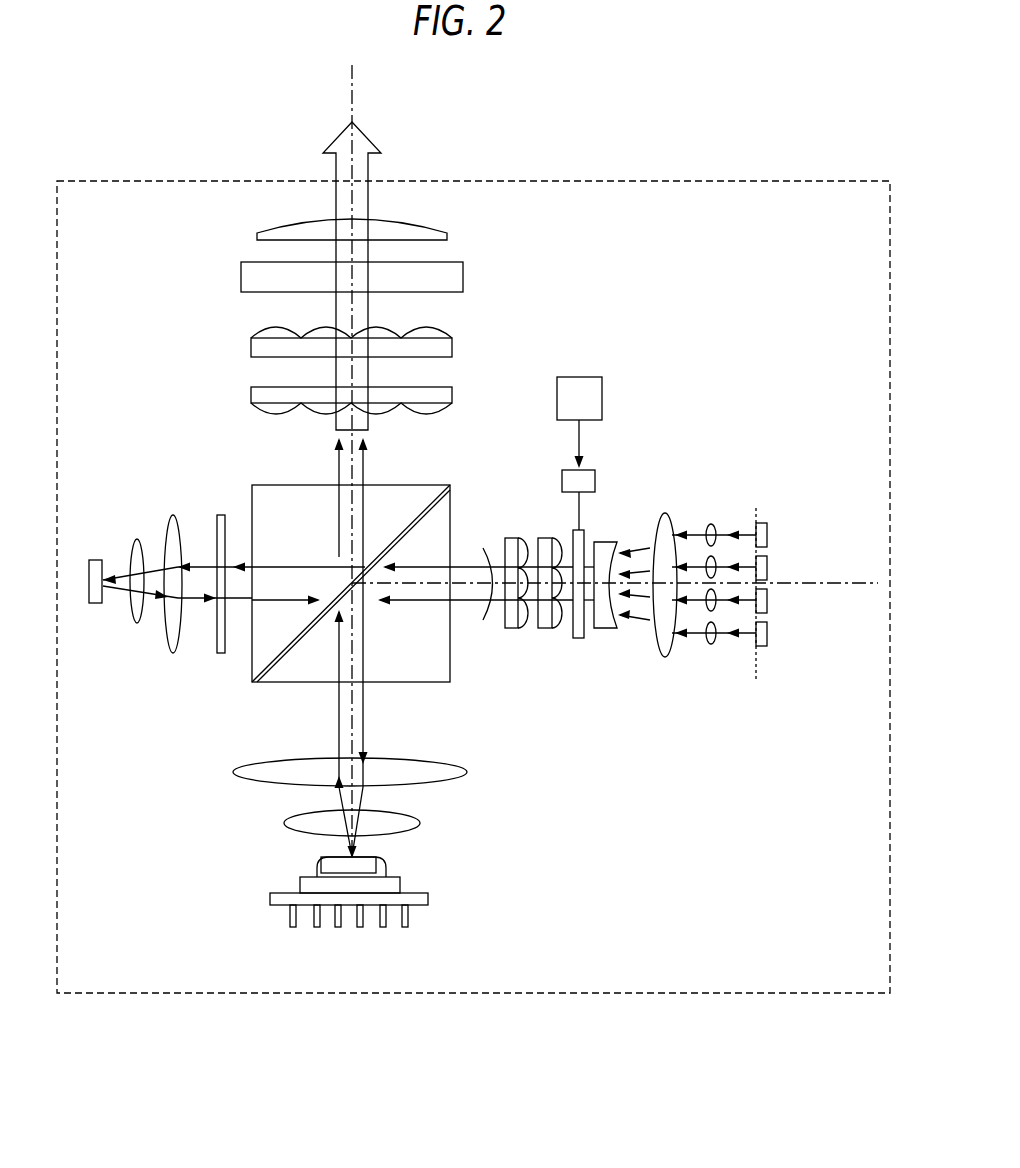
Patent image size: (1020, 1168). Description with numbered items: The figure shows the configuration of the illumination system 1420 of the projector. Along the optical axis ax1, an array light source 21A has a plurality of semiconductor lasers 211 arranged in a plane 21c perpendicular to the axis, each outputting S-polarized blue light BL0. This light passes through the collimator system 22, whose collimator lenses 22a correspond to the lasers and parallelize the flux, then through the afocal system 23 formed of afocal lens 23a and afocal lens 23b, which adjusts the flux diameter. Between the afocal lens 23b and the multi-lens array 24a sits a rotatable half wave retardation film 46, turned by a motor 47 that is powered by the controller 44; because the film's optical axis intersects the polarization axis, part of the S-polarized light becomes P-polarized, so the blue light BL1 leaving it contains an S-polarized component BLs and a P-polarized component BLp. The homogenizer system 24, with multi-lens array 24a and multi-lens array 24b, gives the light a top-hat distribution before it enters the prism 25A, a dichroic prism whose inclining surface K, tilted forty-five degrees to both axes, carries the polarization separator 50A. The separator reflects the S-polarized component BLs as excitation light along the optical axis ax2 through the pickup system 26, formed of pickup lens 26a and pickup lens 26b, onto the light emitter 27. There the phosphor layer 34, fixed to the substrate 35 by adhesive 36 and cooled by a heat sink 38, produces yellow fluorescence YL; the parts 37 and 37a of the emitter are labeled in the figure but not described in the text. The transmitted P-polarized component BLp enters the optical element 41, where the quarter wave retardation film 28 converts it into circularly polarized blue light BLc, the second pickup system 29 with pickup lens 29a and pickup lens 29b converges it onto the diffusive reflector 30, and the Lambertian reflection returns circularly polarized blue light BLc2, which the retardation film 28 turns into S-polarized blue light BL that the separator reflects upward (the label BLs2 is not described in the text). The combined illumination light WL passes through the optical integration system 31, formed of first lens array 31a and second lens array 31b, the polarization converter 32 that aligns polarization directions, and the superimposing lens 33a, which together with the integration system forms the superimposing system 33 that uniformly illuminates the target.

The illumination system 1420 is at (728, 181).
The superimposing system 33 is at (343, 260).
The superimposing lens 33a is at (447, 237).
The polarization converter 32 is at (463, 271).
The optical integration system 31 is at (290, 372).
The first lens array 31a is at (315, 398).
The second lens array 31b is at (250, 346).
The polarization separator 50A is at (374, 576).
The inclining surface K is at (400, 515).
The prism 25A is at (451, 682).
The controller 44 is at (605, 388).
The motor 47 is at (565, 472).
The retardation film 46 is at (578, 640).
The homogenizer system 24 is at (511, 536).
The multi-lens array 24a is at (547, 537).
The multi-lens array 24b is at (511, 537).
The afocal system 23 is at (647, 531).
The afocal lens 23a is at (667, 512).
The afocal lens 23b is at (603, 540).
The collimator system 22 is at (709, 573).
The collimator lens 22a is at (712, 524).
The array light source 21A is at (794, 576).
The semiconductor laser 211 is at (768, 527).
The plane 21c is at (760, 676).
The retardation film 28 is at (221, 514).
The second pickup system 29 is at (125, 583).
The pickup lens 29a is at (170, 628).
The pickup lens 29b is at (133, 622).
The diffusive reflector 30 is at (96, 560).
The optical element 41 is at (150, 606).
The pickup system 26 is at (406, 790).
The pickup lens 26a is at (455, 768).
The pickup lens 26b is at (420, 820).
The light emitter 27 is at (368, 903).
The phosphor layer 34 is at (333, 862).
The substrate 35 is at (300, 886).
The adhesive 36 is at (386, 868).
The reflection layer 37 is at (366, 892).
The reflection surface 37a is at (352, 875).
The heat sink 38 is at (275, 900).
The illumination light WL is at (336, 170).
The blue light BL is at (366, 515).
The fluorescence YL is at (337, 520).
The P-polarized component BLp is at (288, 563).
The S-polarized component BLs is at (462, 604).
The s-polarized blue light BLs2 is at (246, 603).
The circularly polarized blue light BLc is at (205, 560).
The circularly polarized blue light BLc2 is at (195, 642).
The blue light BL0 is at (740, 534).
The blue light BL1 is at (490, 612).
The optical axis ax1 is at (854, 583).
The optical axis ax2 is at (355, 100).